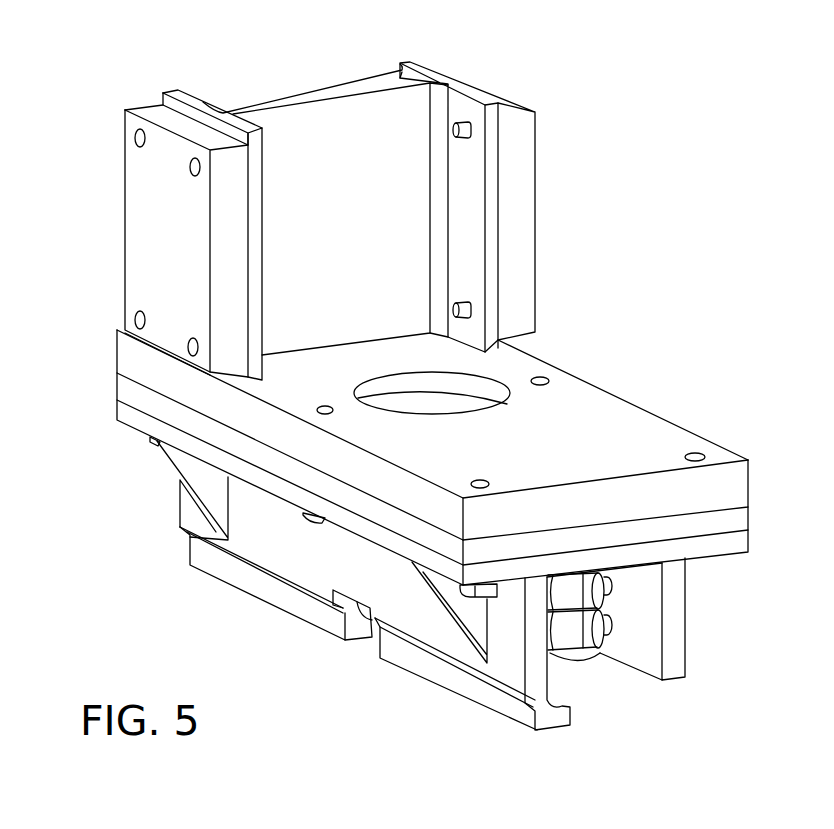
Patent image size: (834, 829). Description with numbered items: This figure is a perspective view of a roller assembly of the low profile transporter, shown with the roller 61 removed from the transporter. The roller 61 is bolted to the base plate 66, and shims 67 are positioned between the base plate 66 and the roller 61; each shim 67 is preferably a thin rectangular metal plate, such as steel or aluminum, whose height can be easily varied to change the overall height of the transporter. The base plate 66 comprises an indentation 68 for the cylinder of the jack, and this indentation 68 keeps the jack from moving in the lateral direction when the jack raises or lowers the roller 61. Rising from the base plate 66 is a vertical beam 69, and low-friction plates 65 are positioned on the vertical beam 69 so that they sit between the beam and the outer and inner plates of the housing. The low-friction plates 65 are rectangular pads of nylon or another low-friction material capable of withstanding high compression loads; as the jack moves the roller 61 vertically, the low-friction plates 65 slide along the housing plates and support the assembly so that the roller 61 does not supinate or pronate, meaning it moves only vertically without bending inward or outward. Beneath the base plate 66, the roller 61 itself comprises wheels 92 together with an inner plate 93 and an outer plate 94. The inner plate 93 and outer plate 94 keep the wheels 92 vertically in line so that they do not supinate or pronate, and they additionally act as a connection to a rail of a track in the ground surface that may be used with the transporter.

The roller 61 is at (690, 648).
The low-friction plates 65 is at (527, 180).
The base plate 66 is at (743, 470).
The shim 67 is at (740, 517).
The indentation 68 is at (473, 398).
The vertical beam 69 is at (307, 135).
The wheels 92 is at (587, 647).
The inner plate 93 is at (523, 712).
The outer plate 94 is at (677, 598).